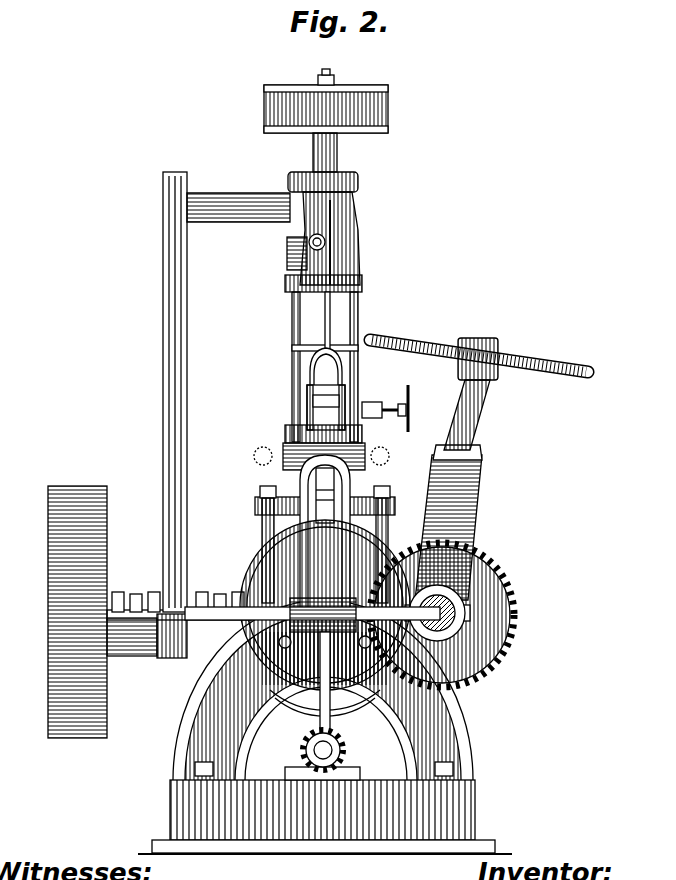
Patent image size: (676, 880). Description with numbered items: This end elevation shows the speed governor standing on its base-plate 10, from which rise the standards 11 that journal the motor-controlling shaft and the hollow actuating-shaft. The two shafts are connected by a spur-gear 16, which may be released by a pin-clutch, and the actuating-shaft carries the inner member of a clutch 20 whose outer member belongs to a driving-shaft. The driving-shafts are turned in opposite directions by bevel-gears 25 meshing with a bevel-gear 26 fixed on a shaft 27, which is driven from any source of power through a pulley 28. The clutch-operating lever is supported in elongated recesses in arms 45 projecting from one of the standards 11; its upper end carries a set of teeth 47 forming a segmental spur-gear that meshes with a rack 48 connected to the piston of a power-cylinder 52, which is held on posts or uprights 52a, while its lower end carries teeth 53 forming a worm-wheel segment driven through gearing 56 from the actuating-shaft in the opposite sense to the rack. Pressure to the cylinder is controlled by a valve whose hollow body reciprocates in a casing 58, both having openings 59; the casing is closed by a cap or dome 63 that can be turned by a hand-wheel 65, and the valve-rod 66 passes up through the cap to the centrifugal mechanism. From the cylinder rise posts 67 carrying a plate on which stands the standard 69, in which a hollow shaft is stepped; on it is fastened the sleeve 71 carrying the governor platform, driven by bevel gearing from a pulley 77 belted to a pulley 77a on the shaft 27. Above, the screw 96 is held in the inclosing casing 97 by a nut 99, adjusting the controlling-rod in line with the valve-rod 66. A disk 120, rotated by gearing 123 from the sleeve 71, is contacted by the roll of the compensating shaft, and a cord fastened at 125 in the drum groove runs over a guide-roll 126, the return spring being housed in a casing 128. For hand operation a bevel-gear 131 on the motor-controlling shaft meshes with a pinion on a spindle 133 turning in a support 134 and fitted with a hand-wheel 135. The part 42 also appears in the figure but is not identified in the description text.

The base-plate 10 is at (476, 812).
The standards 11 is at (468, 738).
The spur-gear 16 is at (503, 578).
The clutch 20 is at (288, 700).
The bevel-gears 25 is at (305, 669).
The bevel-gear 26 is at (290, 615).
The shaft 27 is at (48, 618).
The pulley 28 is at (55, 545).
The fly wheel 42 is at (262, 552).
The arms 45 is at (285, 650).
The set of teeth 47 is at (300, 503).
The rack 48 is at (372, 450).
The power-cylinder 52 is at (300, 478).
The posts or uprights 52a is at (325, 544).
The teeth 53 is at (342, 736).
The gearing 56 is at (312, 722).
The casing 58 is at (316, 408).
The openings 59 is at (352, 492).
The cap or dome 63 is at (314, 356).
The hand-wheel 65 is at (318, 340).
The valve-rod 66 is at (332, 310).
The posts or uprights 67 is at (292, 362).
The standard 69 is at (355, 236).
The sleeve or hollow shaft 71 is at (337, 155).
The pulley 77 is at (163, 190).
The pulley 77a is at (188, 590).
The screw 96 is at (322, 72).
The inclosing casing 97 is at (388, 88).
The nut 99 is at (332, 74).
The disk 120 is at (350, 222).
The gearing 123 is at (292, 437).
The fastening point 125 is at (346, 262).
The guide-roll 126 is at (312, 394).
The casing 128 is at (287, 245).
The bevel-gear 131 is at (490, 606).
The spindle 133 is at (472, 420).
The support 134 is at (478, 512).
The hand-wheel 135 is at (536, 364).